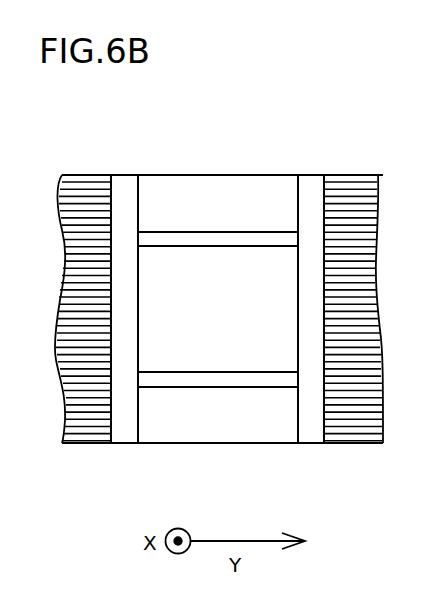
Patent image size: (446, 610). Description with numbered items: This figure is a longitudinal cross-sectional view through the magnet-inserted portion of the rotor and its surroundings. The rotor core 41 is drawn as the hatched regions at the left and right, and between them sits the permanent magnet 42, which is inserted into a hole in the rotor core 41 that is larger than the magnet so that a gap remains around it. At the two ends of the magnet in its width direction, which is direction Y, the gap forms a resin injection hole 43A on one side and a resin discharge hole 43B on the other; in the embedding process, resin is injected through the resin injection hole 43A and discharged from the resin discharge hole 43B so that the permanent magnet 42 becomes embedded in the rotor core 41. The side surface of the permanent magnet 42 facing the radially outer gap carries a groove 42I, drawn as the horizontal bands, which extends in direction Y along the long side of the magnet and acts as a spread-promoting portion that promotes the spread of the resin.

The rotor core 41 is at (345, 420).
The permanent magnet 42 is at (183, 198).
The groove 42I is at (243, 243).
The resin injection hole 43A is at (124, 193).
The resin discharge hole 43B is at (313, 198).